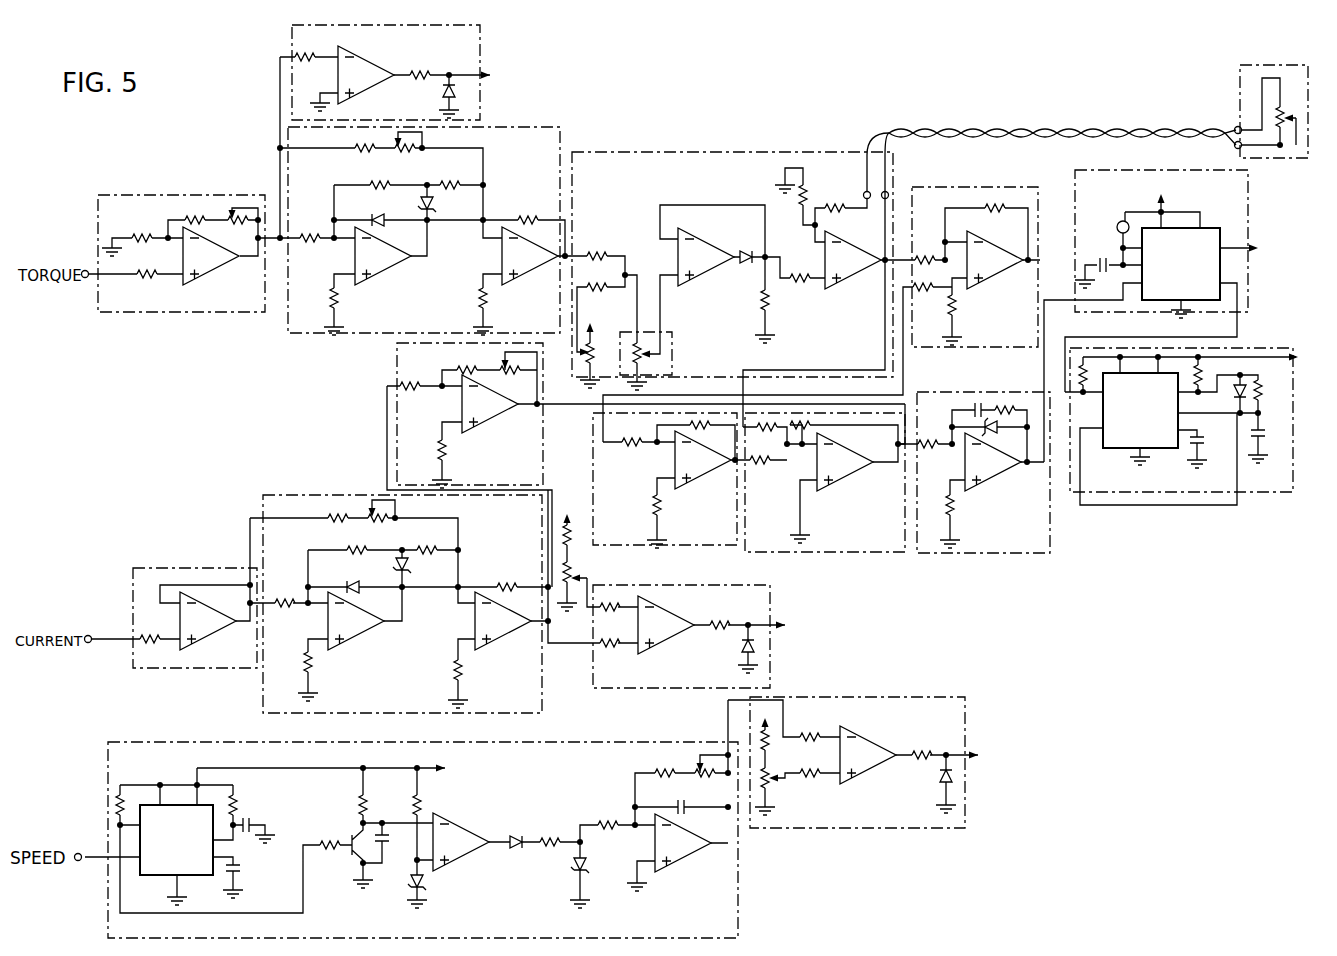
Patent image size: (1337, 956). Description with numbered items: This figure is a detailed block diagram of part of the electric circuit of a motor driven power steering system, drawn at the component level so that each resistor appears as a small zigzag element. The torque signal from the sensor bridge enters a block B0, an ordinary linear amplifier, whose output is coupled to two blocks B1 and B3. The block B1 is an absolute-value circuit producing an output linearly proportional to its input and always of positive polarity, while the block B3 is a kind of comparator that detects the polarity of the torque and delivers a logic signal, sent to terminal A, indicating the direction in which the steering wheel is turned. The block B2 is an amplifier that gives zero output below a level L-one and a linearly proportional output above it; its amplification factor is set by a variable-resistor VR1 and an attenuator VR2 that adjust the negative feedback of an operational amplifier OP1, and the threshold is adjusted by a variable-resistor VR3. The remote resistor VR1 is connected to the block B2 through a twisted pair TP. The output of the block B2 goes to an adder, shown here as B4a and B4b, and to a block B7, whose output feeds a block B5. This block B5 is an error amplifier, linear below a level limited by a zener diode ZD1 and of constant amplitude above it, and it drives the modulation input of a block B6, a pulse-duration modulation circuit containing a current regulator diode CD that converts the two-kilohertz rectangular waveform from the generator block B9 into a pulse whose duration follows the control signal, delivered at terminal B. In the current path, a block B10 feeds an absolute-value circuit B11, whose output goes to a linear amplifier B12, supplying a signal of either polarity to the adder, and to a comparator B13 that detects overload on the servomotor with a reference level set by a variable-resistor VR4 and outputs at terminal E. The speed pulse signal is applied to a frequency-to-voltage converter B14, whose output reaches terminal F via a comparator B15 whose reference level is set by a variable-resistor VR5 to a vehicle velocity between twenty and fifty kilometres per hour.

The linear amplifier block B0 is at (175, 195).
The absolute-value circuit B1 is at (518, 127).
The amplifier block B2 is at (633, 152).
The comparator block B3 is at (485, 42).
The adder block B4a is at (978, 187).
The adder block B4b is at (667, 548).
The error amplifier B5 is at (965, 392).
The pulse-duration modulation circuit B6 is at (1074, 200).
The block B7 is at (887, 552).
The rectangular waveform generator circuit B9 is at (1282, 348).
The block B10 is at (190, 568).
The absolute-value circuit B11 is at (279, 498).
The linear amplifier B12 is at (396, 380).
The comparator B13 is at (770, 591).
The frequency-to-voltage converter B14 is at (541, 745).
The comparator B15 is at (850, 697).
The variable-resistor VR1 is at (1237, 95).
The attenuator (variable-resistor) VR2 is at (665, 361).
The variable-resistor VR3 is at (585, 366).
The variable-resistor VR4 is at (580, 554).
The variable-resistor VR5 is at (785, 788).
The operational amplifier OP1 is at (853, 268).
The zener diode ZD1 is at (990, 434).
The current regulator diode CD is at (1119, 220).
The twisted pair TP is at (1016, 132).